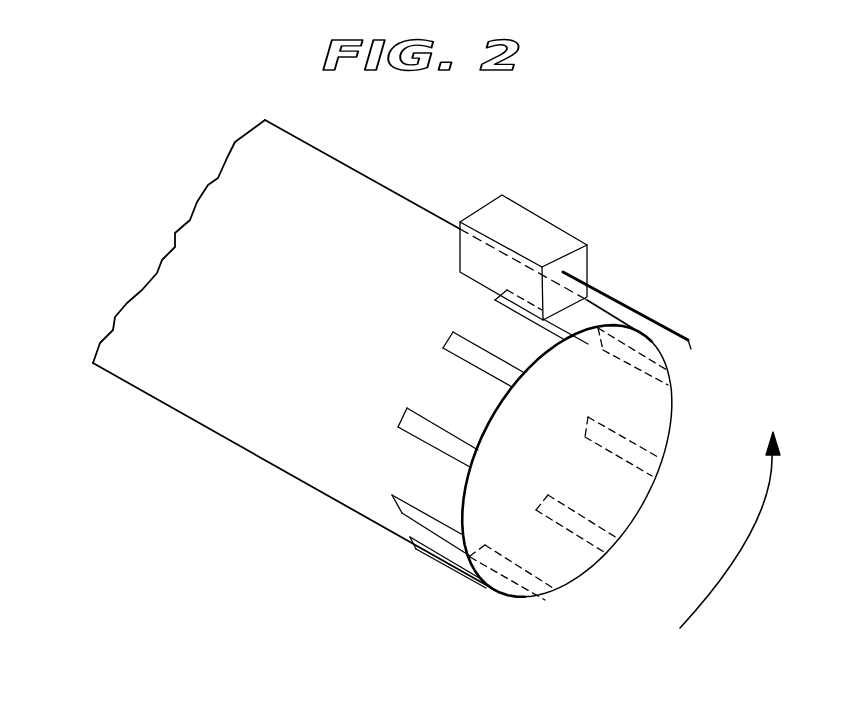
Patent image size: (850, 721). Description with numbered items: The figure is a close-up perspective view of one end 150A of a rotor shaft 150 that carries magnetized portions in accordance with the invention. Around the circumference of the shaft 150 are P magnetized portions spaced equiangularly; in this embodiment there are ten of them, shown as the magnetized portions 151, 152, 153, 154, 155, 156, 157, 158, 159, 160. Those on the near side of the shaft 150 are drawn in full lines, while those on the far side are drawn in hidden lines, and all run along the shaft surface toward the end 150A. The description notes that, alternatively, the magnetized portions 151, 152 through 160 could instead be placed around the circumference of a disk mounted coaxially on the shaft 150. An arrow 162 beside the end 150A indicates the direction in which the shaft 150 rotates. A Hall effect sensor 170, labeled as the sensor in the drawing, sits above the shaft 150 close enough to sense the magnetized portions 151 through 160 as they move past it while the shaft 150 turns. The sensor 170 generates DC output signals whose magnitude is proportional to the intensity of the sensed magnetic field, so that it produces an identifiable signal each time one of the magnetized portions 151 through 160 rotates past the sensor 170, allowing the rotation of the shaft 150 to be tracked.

The shaft 150 is at (205, 362).
The end of the shaft 150A is at (510, 601).
The magnetized portion 151 is at (608, 318).
The magnetized portion 152 is at (497, 298).
The magnetized portion 153 is at (463, 350).
The magnetized portion 154 is at (415, 427).
The magnetized portion 155 is at (407, 512).
The magnetized portion 156 is at (430, 553).
The magnetized portion 157 is at (550, 600).
The magnetized portion 158 is at (617, 538).
The magnetized portion 159 is at (660, 472).
The magnetized portion 160 is at (676, 378).
The arrow 162 is at (750, 533).
The Hall effect sensor 170 is at (513, 220).